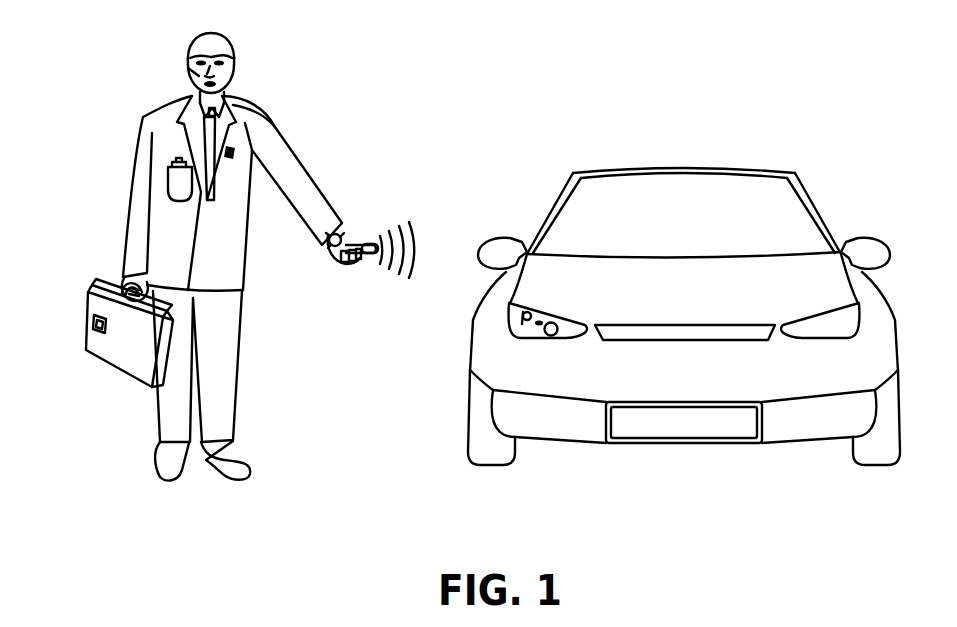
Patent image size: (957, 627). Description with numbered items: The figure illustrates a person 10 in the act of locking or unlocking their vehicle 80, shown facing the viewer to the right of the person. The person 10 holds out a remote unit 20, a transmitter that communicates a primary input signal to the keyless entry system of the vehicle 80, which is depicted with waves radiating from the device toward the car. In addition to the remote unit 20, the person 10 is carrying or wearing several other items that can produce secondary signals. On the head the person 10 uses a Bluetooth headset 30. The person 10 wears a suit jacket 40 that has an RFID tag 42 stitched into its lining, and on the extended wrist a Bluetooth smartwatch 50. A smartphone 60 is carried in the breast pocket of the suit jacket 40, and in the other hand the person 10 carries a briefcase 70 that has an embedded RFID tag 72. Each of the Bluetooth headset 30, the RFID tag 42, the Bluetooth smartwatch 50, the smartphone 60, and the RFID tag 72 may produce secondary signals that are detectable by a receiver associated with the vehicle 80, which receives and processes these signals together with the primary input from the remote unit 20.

The person 10 is at (78, 132).
The remote unit 20 is at (376, 242).
The Bluetooth headset 30 is at (189, 71).
The suit jacket 40 is at (250, 122).
The RFID tag 42 is at (238, 152).
The Bluetooth smartwatch 50 is at (343, 230).
The smartphone 60 is at (178, 166).
The briefcase 70 is at (97, 291).
The RFID tag 72 is at (93, 322).
The vehicle 80 is at (757, 173).